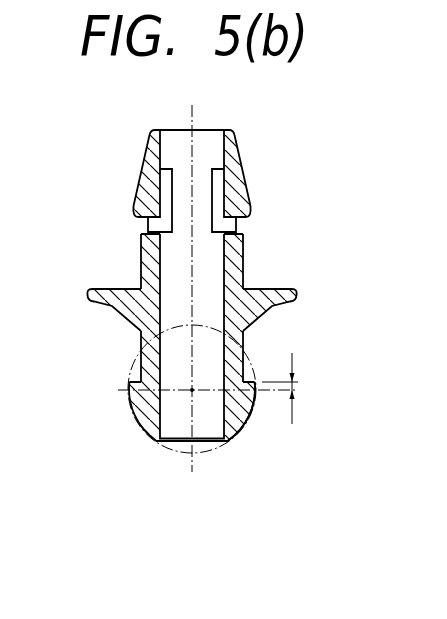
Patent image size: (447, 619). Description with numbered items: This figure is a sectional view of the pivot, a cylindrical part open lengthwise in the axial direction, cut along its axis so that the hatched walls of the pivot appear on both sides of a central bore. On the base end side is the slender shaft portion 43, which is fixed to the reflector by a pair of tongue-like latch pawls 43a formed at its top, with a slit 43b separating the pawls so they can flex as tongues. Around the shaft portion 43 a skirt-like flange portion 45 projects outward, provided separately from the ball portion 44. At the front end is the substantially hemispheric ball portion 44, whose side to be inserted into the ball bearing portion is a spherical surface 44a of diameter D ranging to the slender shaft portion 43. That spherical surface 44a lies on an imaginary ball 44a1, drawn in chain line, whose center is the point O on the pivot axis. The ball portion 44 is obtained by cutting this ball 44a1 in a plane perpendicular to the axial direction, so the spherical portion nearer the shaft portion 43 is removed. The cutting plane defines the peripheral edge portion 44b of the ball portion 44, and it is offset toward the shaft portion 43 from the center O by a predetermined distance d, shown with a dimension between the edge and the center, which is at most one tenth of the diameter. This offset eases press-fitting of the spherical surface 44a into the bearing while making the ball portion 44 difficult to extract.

The shaft portion 43 is at (243, 263).
The latch pawls 43a is at (140, 181).
The slit 43b is at (215, 200).
The flange portion 45 is at (90, 289).
The ball portion 44 is at (155, 439).
The spherical surface 44a is at (252, 425).
The ball 44a1 is at (173, 449).
The peripheral edge portion 44b is at (132, 382).
The center O is at (192, 391).
The offset distance d is at (288, 388).